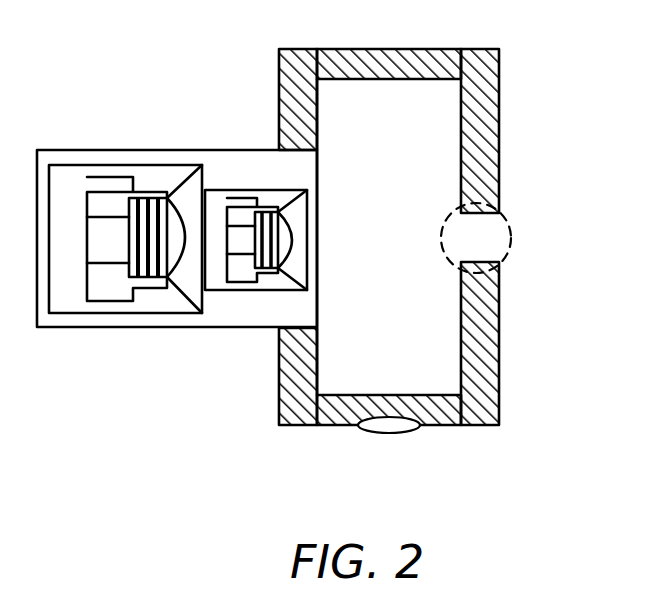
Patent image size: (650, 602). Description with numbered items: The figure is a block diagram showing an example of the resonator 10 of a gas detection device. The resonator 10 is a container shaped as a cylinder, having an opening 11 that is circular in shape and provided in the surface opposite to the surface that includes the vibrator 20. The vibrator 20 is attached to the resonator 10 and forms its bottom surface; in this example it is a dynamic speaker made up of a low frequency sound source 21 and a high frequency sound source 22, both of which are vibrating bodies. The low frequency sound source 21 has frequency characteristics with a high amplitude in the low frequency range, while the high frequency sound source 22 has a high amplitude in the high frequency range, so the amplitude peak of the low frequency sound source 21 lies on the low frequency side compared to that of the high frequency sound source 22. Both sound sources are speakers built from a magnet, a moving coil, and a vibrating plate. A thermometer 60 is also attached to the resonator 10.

The resonator 10 is at (499, 98).
The opening 11 is at (499, 265).
The vibrator 20 is at (317, 242).
The low frequency sound source 21 is at (103, 165).
The high frequency sound source 22 is at (240, 190).
The thermometer 60 is at (407, 432).